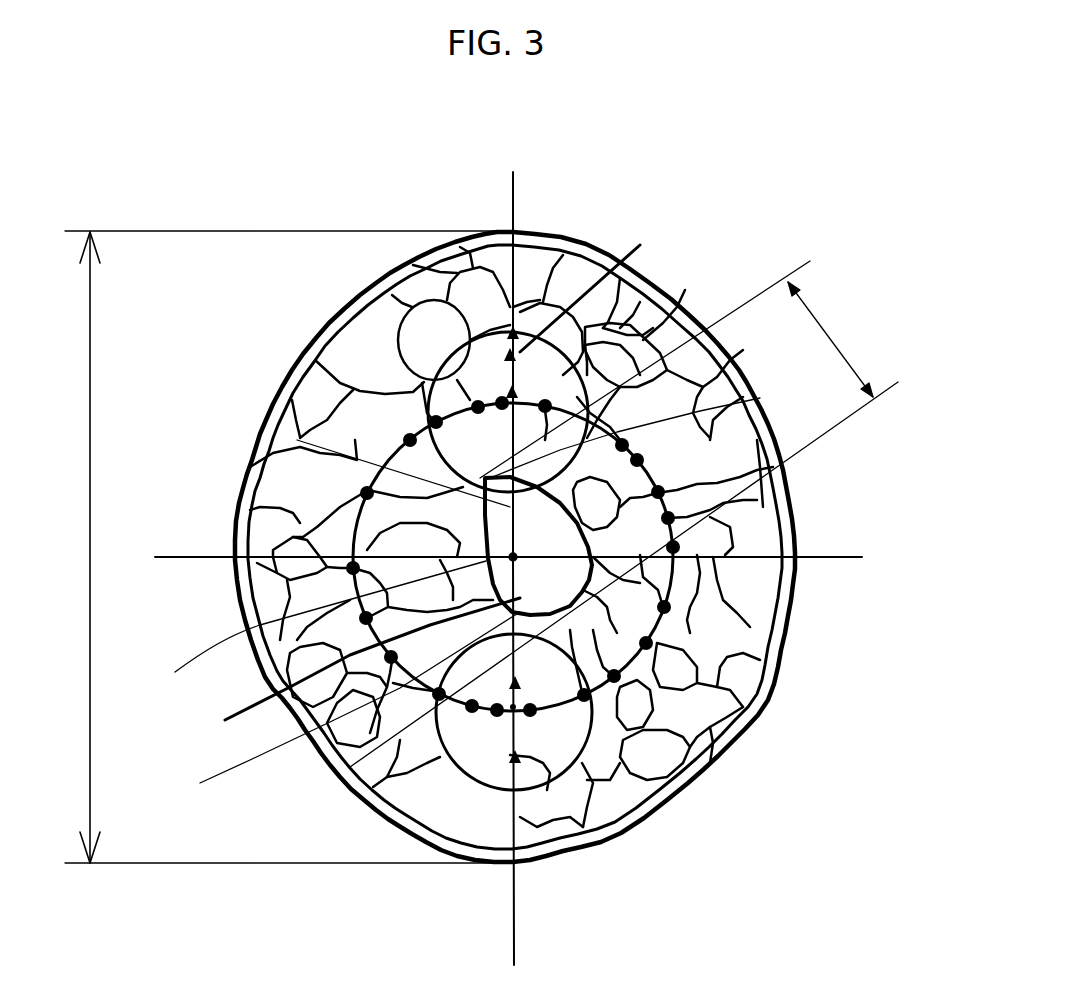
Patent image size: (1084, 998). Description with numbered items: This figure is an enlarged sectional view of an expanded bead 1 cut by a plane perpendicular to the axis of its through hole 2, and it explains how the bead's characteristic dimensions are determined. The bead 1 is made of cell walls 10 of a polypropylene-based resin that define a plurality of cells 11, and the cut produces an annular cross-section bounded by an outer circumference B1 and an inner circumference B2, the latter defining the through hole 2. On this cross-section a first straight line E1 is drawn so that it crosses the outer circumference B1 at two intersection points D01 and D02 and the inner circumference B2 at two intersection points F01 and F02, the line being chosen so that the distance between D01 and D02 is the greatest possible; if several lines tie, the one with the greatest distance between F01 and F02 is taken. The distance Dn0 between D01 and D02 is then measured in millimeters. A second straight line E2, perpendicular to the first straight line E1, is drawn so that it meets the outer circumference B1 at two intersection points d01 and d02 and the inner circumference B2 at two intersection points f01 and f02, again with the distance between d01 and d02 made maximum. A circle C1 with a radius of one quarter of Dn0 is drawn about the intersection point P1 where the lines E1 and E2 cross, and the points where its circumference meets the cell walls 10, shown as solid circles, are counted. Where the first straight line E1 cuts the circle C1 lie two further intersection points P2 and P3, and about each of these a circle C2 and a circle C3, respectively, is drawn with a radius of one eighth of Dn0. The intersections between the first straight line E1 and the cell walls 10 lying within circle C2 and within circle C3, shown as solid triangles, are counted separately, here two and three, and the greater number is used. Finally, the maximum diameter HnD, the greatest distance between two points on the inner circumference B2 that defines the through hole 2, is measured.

The expanded bead 1 is at (792, 213).
The through hole 2 is at (361, 672).
The cell walls 10 is at (687, 783).
The cells 11 is at (683, 693).
The outer circumference B1 is at (308, 353).
The inner circumference B2 is at (297, 440).
The circle C1 is at (683, 585).
The circle C2 is at (640, 245).
The circle C3 is at (633, 813).
The intersection point D01 is at (514, 213).
The intersection point D02 is at (516, 862).
The intersection point d01 is at (237, 557).
The intersection point d02 is at (815, 557).
The first straight line E1 is at (513, 913).
The second straight line E2 is at (188, 560).
The distance Dn0 is at (98, 547).
The maximum diameter HnD is at (624, 514).
The intersection point P1 is at (533, 548).
The intersection point P2 is at (668, 291).
The intersection point P3 is at (350, 767).
The intersection point F01 is at (760, 398).
The intersection point F02 is at (342, 711).
The intersection point f01 is at (318, 629).
The intersection point f02 is at (587, 558).